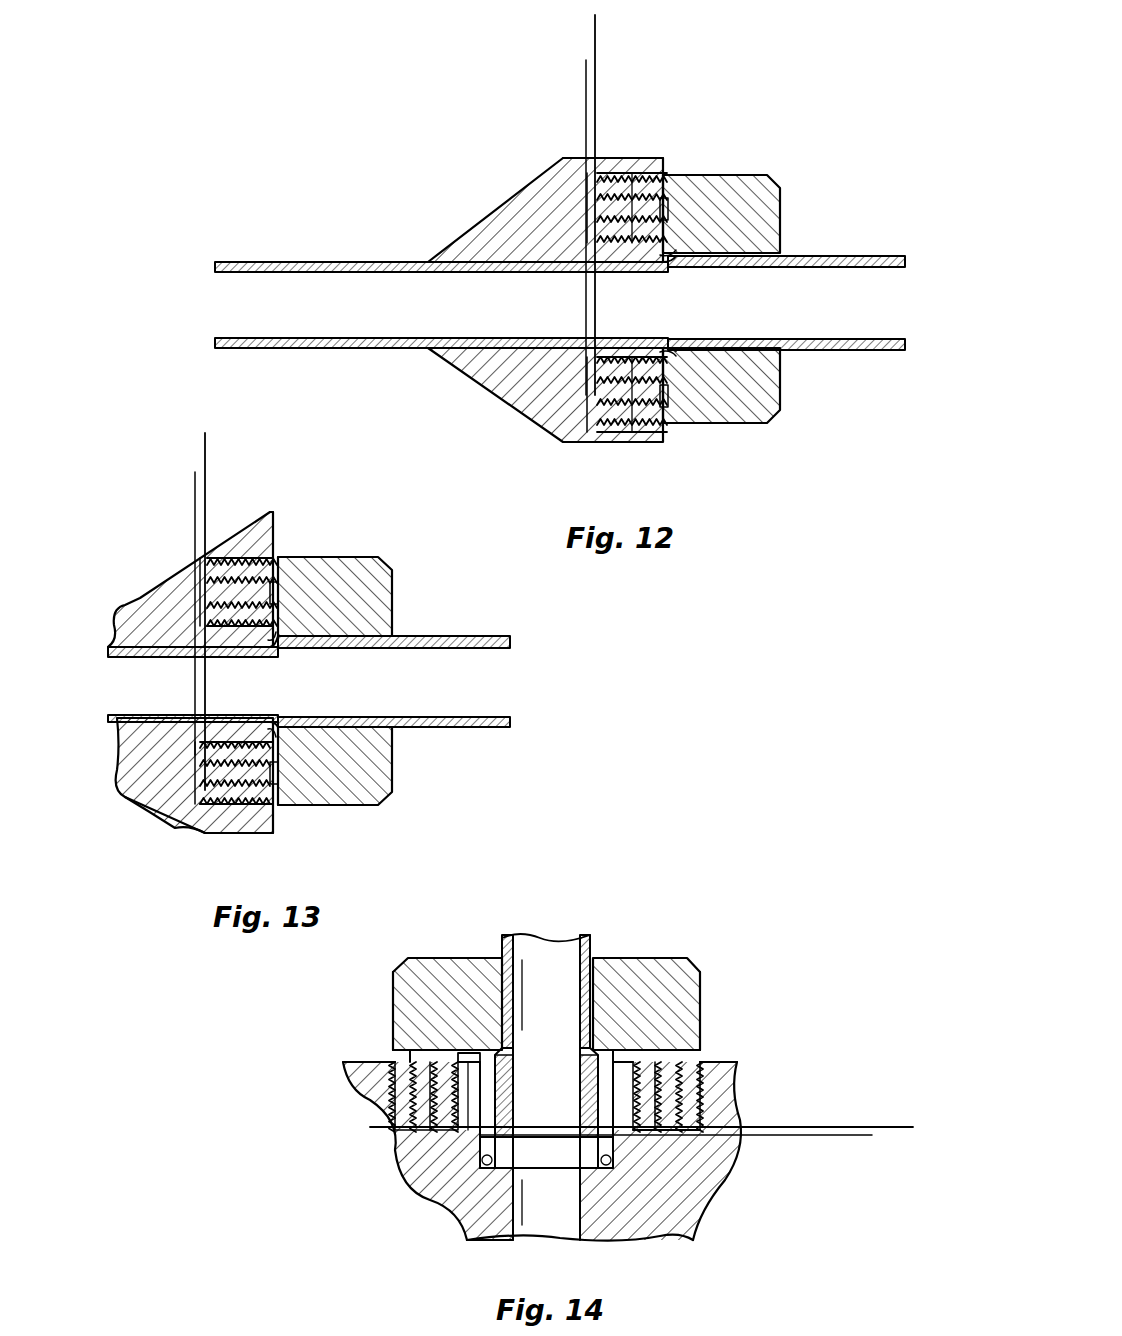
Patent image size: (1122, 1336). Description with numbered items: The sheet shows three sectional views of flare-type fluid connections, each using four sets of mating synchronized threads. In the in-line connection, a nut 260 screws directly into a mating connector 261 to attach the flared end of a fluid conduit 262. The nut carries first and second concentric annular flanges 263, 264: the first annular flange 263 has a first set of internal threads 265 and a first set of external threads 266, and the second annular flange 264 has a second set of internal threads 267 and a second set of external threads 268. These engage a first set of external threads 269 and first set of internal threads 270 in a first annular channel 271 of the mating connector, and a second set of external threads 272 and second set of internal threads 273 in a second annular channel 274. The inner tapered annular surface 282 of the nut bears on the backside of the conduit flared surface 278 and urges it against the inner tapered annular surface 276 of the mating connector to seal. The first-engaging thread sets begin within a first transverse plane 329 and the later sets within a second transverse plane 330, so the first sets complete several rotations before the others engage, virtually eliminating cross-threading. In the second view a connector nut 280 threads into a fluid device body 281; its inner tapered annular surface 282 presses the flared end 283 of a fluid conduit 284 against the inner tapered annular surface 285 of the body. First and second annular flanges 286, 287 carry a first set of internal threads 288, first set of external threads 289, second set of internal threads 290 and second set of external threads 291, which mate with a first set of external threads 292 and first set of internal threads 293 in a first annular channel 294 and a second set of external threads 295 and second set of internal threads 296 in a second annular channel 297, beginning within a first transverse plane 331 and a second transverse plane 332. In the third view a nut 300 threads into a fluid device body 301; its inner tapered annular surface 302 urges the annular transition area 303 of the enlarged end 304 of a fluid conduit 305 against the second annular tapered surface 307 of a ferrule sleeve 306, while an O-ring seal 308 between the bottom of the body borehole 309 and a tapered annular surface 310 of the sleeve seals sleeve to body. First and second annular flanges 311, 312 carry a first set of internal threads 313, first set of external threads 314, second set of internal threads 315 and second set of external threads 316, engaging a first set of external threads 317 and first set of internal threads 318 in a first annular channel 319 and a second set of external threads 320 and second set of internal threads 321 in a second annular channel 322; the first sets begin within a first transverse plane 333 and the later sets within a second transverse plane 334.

In FIG. 12, the nut 260 is at (765, 235).
In FIG. 12, the mating connector 261 is at (500, 230).
In FIG. 12, the fluid conduit 262 is at (850, 352).
In FIG. 12, the first annular flange 263 is at (540, 205).
In FIG. 12, the second annular flange 264 is at (600, 168).
In FIG. 12, the first set of internal threads 265 is at (632, 168).
In FIG. 12, the first set of external threads 266 is at (583, 172).
In FIG. 12, the second set of internal threads 267 is at (670, 400).
In FIG. 12, the second set of external threads 268 is at (640, 420).
In FIG. 12, the first set of external threads 269 is at (633, 413).
In FIG. 12, the first set of internal threads 270 is at (563, 420).
In FIG. 12, the first annular channel 271 is at (585, 362).
In FIG. 12, the second set of external threads 272 is at (605, 415).
In FIG. 12, the second set of internal threads 273 is at (658, 168).
In FIG. 12, the second annular channel 274 is at (600, 400).
In FIG. 12, the inner tapered annular surface 276 is at (685, 235).
In FIG. 12, the flared surface 278 is at (690, 395).
In FIG. 12, the inner tapered annular surface 282 is at (673, 253).
In FIG. 13, the inner tapered annular surface 282 is at (262, 650).
In FIG. 12, the first transverse plane 329 is at (586, 73).
In FIG. 12, the second transverse plane 330 is at (597, 32).
In FIG. 13, the connector nut 280 is at (385, 603).
In FIG. 13, the fluid device body 281 is at (228, 540).
In FIG. 13, the flared end 283 is at (320, 805).
In FIG. 13, the fluid conduit 284 is at (470, 727).
In FIG. 13, the inner tapered annular surface 285 is at (293, 790).
In FIG. 13, the first annular flange 286 is at (373, 615).
In FIG. 13, the second annular flange 287 is at (275, 810).
In FIG. 13, the first set of internal threads 288 is at (230, 590).
In FIG. 13, the first set of external threads 289 is at (268, 600).
In FIG. 13, the second set of internal threads 290 is at (210, 585).
In FIG. 13, the second set of external threads 291 is at (266, 512).
In FIG. 13, the first set of external threads 292 is at (135, 800).
In FIG. 13, the first set of internal threads 293 is at (250, 815).
In FIG. 13, the first annular channel 294 is at (200, 745).
In FIG. 13, the second set of external threads 295 is at (180, 822).
In FIG. 13, the second set of internal threads 296 is at (228, 805).
In FIG. 13, the second annular channel 297 is at (200, 560).
In FIG. 13, the first transverse plane 331 is at (195, 490).
In FIG. 13, the second transverse plane 332 is at (205, 452).
In FIG. 14, the nut 300 is at (650, 975).
In FIG. 14, the fluid device body 301 is at (640, 1245).
In FIG. 14, the inner tapered annular surface 302 is at (478, 1125).
In FIG. 14, the annular transition area 303 is at (700, 1020).
In FIG. 14, the enlarged end 304 is at (497, 1140).
In FIG. 14, the fluid conduit 305 is at (590, 945).
In FIG. 14, the ferrule sleeve 306 is at (470, 1200).
In FIG. 14, the second annular tapered surface 307 is at (400, 1005).
In FIG. 14, the O-ring seal 308 is at (660, 1215).
In FIG. 14, the fluid device body borehole 309 is at (615, 1165).
In FIG. 14, the tapered annular surface 310 is at (480, 1245).
In FIG. 14, the first annular flange 311 is at (400, 1035).
In FIG. 14, the second annular flange 312 is at (462, 1056).
In FIG. 14, the first set of internal threads 313 is at (700, 1115).
In FIG. 14, the first set of external threads 314 is at (700, 1080).
In FIG. 14, the second set of internal threads 315 is at (700, 1042).
In FIG. 14, the second set of external threads 316 is at (665, 1095).
In FIG. 14, the first set of external threads 317 is at (395, 1070).
In FIG. 14, the first set of internal threads 318 is at (700, 988).
In FIG. 14, the first annular channel 319 is at (610, 1140).
In FIG. 14, the second set of external threads 320 is at (730, 1062).
In FIG. 14, the second set of internal threads 321 is at (440, 1080).
In FIG. 14, the second annular channel 322 is at (468, 1085).
In FIG. 14, the first transverse plane 333 is at (848, 1137).
In FIG. 14, the reference line 334 is at (895, 1125).